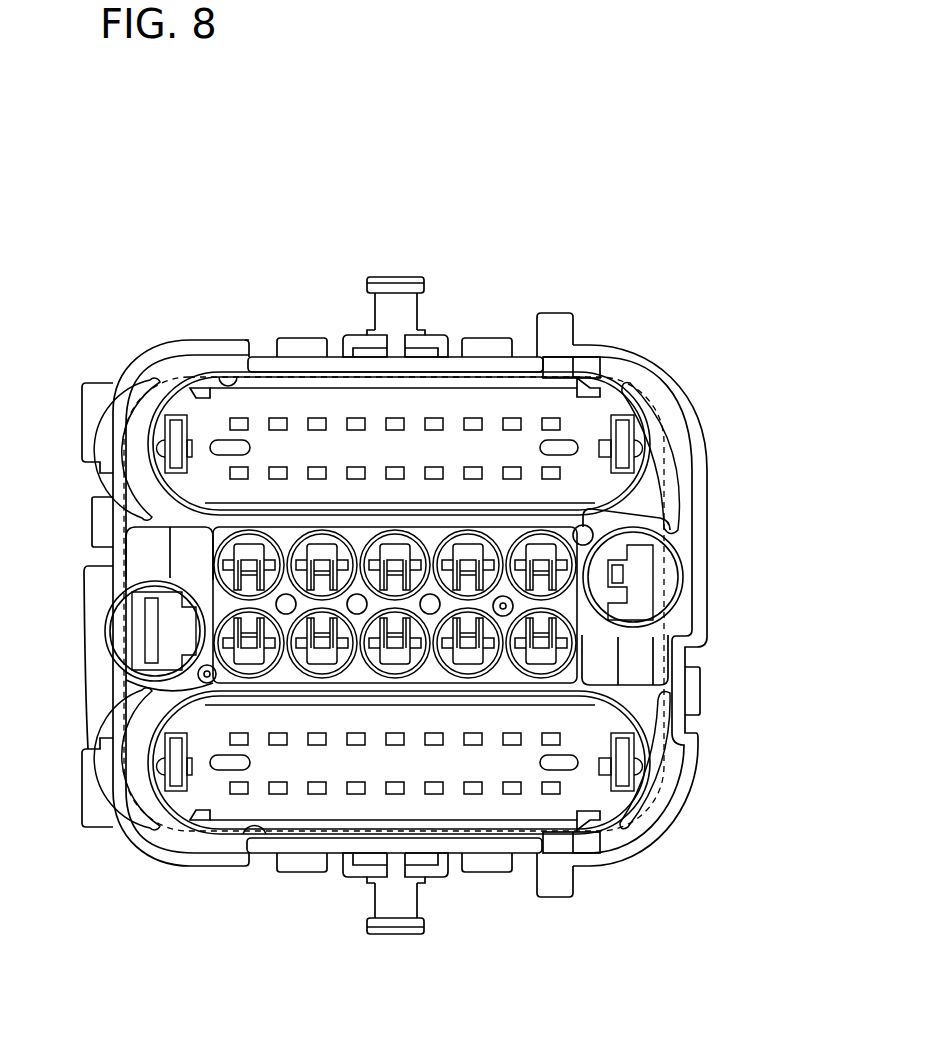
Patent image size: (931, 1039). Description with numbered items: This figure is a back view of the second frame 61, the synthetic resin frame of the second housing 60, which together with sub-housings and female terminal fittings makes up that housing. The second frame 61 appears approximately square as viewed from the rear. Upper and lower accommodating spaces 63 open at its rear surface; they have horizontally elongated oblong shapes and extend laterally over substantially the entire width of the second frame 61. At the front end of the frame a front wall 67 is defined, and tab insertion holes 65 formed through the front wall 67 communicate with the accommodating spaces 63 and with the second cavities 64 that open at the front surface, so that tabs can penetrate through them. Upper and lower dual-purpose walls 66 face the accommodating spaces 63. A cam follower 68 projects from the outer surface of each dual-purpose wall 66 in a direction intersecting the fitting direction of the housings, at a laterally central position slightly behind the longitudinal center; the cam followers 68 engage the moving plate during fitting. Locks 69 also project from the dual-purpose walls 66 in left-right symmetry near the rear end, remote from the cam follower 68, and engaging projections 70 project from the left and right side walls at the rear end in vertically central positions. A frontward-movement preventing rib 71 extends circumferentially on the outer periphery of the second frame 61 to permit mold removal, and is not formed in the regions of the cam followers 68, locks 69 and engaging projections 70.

The second housing 60 is at (669, 236).
The second frame 61 is at (658, 392).
The accommodating space 63 is at (222, 377).
The second cavity 64 is at (676, 585).
The tab insertion hole 65 is at (565, 477).
The dual-purpose wall 66 is at (263, 362).
The front wall 67 is at (537, 410).
The cam follower 68 is at (397, 277).
The lock 69 is at (300, 342).
The engaging projection 70 is at (92, 523).
The frontward-movement preventing rib 71 is at (681, 417).